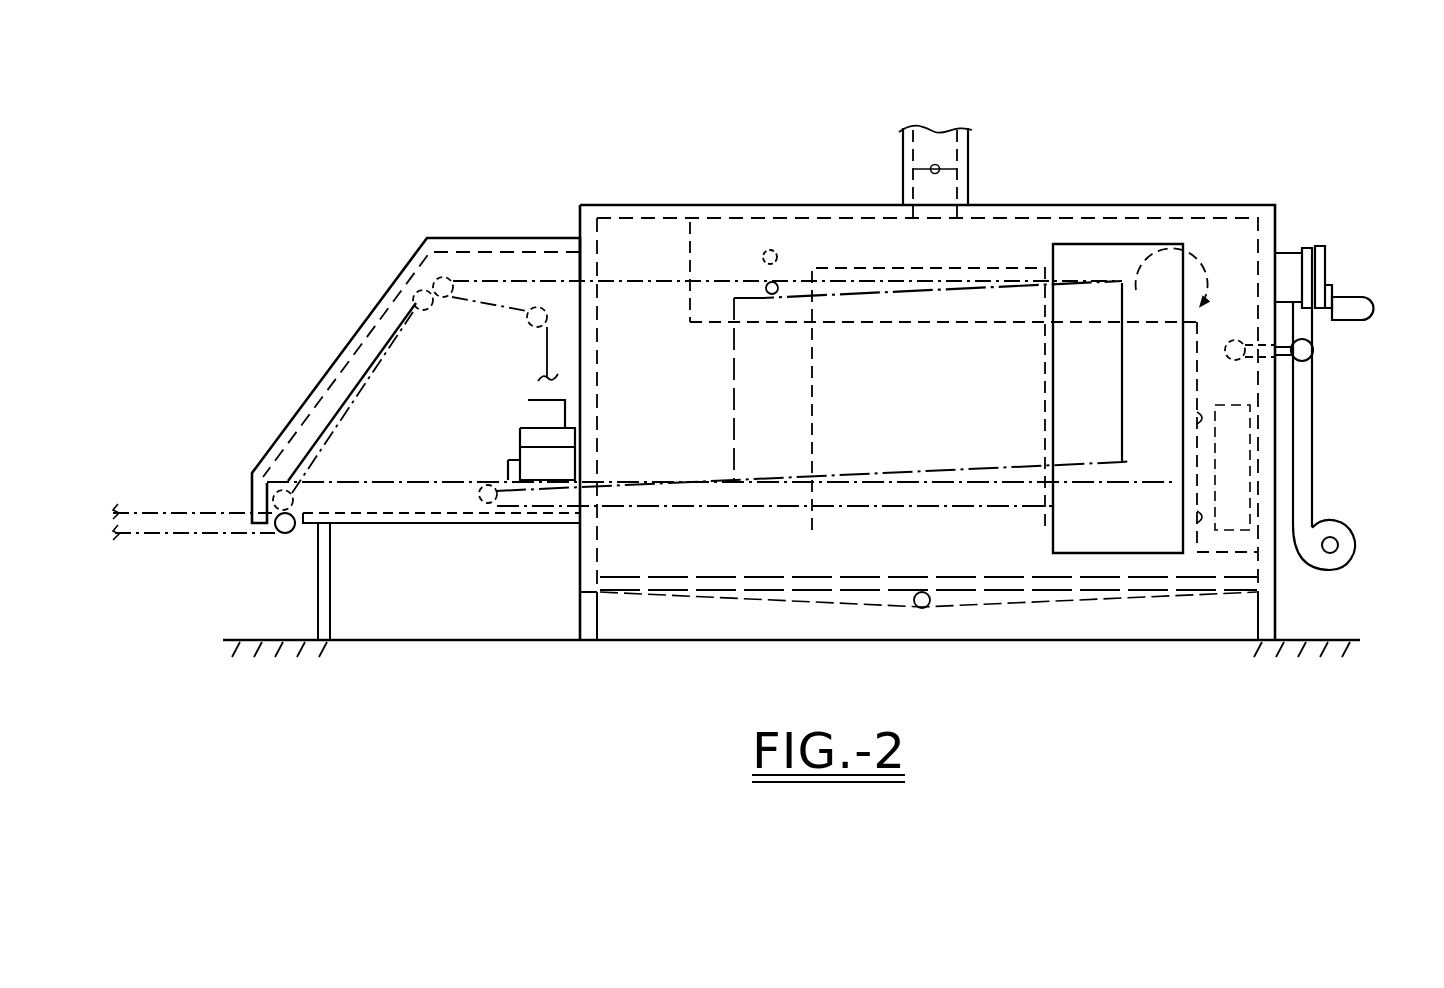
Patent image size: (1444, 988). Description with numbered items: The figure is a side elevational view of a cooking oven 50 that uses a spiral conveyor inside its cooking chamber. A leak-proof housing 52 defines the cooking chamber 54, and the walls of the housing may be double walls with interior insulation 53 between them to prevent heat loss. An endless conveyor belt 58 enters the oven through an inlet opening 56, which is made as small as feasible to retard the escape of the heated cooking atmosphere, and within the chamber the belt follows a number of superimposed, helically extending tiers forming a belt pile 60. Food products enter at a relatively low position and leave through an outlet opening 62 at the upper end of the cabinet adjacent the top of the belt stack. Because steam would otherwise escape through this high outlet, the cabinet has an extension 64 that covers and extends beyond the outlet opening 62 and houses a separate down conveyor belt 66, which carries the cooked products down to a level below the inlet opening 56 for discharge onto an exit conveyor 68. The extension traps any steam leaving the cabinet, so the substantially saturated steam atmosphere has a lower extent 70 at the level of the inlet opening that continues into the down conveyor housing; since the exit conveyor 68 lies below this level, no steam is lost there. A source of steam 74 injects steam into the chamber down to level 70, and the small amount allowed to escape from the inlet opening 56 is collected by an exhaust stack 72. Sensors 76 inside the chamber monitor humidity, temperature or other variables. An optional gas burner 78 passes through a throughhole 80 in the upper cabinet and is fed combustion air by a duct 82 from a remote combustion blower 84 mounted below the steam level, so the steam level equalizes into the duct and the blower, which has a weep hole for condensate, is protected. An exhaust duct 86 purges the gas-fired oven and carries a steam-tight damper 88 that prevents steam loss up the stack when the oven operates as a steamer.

The oven 50 is at (673, 197).
The housing 52 is at (647, 202).
The interior insulation 53 is at (1195, 212).
The cooking chamber 54 is at (847, 238).
The inlet opening 56 is at (590, 507).
The conveyor belt 58 is at (800, 477).
The belt pile 60 is at (730, 425).
The outlet opening 62 is at (592, 266).
The extension 64 is at (388, 276).
The down conveyor belt 66 is at (366, 412).
The exit conveyor 68 is at (188, 510).
The lower extent of steam 70 is at (425, 478).
The exhaust stack 72 is at (528, 413).
The source of steam 74 is at (1318, 350).
The sensors 76 is at (767, 245).
The gas burner 78 is at (1338, 273).
The throughhole 80 is at (1286, 248).
The duct 82 is at (1311, 437).
The combustion blower 84 is at (1348, 528).
The exhaust duct 86 is at (968, 142).
The damper 88 is at (943, 167).